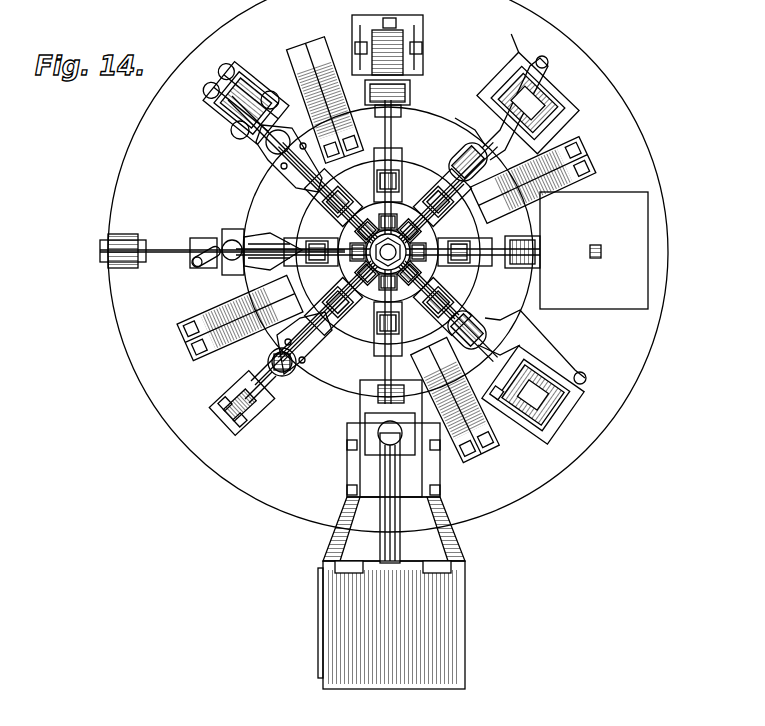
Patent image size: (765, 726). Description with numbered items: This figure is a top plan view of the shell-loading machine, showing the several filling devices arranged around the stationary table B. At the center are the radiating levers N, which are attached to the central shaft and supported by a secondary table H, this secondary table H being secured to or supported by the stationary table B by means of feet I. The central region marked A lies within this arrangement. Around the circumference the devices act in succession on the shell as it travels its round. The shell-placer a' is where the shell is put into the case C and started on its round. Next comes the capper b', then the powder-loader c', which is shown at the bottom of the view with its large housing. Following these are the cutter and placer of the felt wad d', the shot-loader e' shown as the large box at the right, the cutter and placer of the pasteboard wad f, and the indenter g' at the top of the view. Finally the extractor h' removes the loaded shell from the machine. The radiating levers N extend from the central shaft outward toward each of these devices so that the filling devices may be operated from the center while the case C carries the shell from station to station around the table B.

The disc ring A is at (388, 252).
The stationary table B is at (388, 266).
The case C is at (343, 225).
The secondary table H is at (388, 252).
The radiating levers N is at (388, 252).
The feet I is at (386, 250).
The shell-placer a' is at (161, 265).
The capper b' is at (242, 407).
The powder-loader c' is at (391, 534).
The cutter and placer of the felt wad d' is at (533, 395).
The shot-loader e' is at (576, 250).
The cutter and placer of the pasteboard wad f is at (524, 94).
The indenter g' is at (402, 66).
The extractor of the loaded shell h' is at (240, 101).